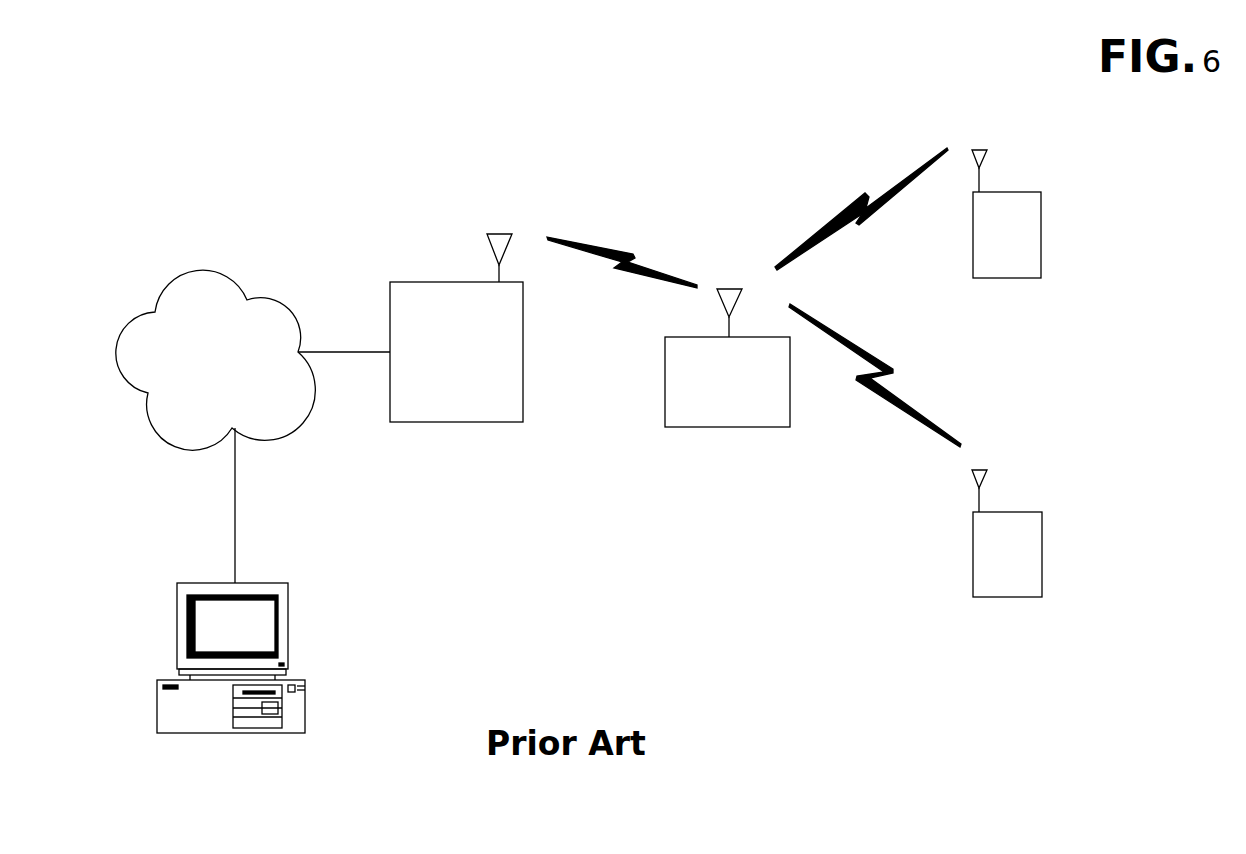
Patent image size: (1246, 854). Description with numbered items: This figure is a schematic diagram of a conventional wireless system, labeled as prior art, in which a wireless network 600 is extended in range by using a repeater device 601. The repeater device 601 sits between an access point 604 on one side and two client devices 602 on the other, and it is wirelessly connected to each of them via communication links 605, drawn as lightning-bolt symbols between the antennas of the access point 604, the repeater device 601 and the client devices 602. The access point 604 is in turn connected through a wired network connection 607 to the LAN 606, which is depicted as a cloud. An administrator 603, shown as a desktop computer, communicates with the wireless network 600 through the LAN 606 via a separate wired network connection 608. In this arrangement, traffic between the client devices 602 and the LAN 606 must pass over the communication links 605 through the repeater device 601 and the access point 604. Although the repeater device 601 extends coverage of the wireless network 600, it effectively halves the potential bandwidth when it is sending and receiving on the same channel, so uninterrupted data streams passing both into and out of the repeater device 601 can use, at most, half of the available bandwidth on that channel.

The wireless network 600 is at (580, 140).
The repeater device 601 is at (712, 427).
The client device 602 is at (1041, 215).
The administrator 603 is at (280, 652).
The access point 604 is at (405, 422).
The communication link 605 is at (797, 248).
The LAN 606 is at (145, 311).
The wired network connection 607 is at (337, 345).
The wired network connection 608 is at (233, 503).